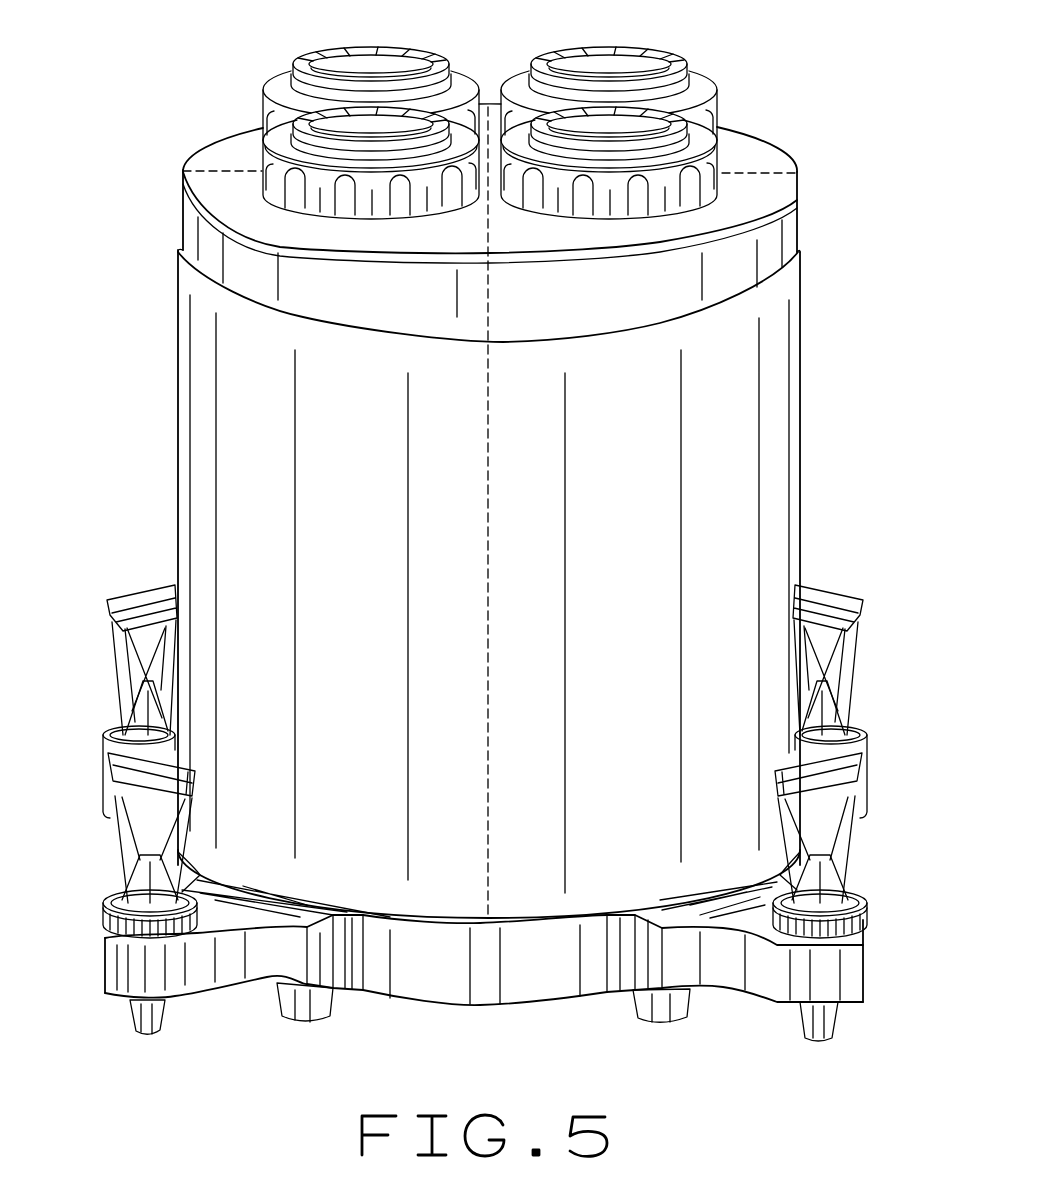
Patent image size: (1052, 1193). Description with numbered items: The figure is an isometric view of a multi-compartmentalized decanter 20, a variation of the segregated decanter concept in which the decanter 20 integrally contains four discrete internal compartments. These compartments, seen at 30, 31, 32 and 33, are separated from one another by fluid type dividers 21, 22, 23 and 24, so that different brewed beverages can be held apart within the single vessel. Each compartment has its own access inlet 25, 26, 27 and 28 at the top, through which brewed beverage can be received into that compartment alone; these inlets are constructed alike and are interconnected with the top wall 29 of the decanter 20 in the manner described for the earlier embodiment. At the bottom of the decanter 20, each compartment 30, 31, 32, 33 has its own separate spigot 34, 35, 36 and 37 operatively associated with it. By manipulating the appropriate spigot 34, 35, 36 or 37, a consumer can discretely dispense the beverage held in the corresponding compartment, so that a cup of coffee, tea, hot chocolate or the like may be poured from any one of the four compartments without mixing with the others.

The decanter 20 is at (800, 421).
The fluid type divider 21 is at (492, 233).
The fluid type divider 22 is at (482, 108).
The fluid type divider 23 is at (763, 175).
The fluid type divider 24 is at (207, 170).
The access inlet 25 is at (687, 208).
The access inlet 26 is at (721, 94).
The access inlet 27 is at (327, 200).
The access inlet 28 is at (291, 68).
The top wall 29 is at (240, 191).
The compartment 30 is at (281, 303).
The compartment 31 is at (693, 304).
The compartment 32 is at (747, 153).
The compartment 33 is at (243, 138).
The spigot 34 is at (116, 928).
The spigot 35 is at (865, 920).
The spigot 36 is at (868, 737).
The spigot 37 is at (117, 727).